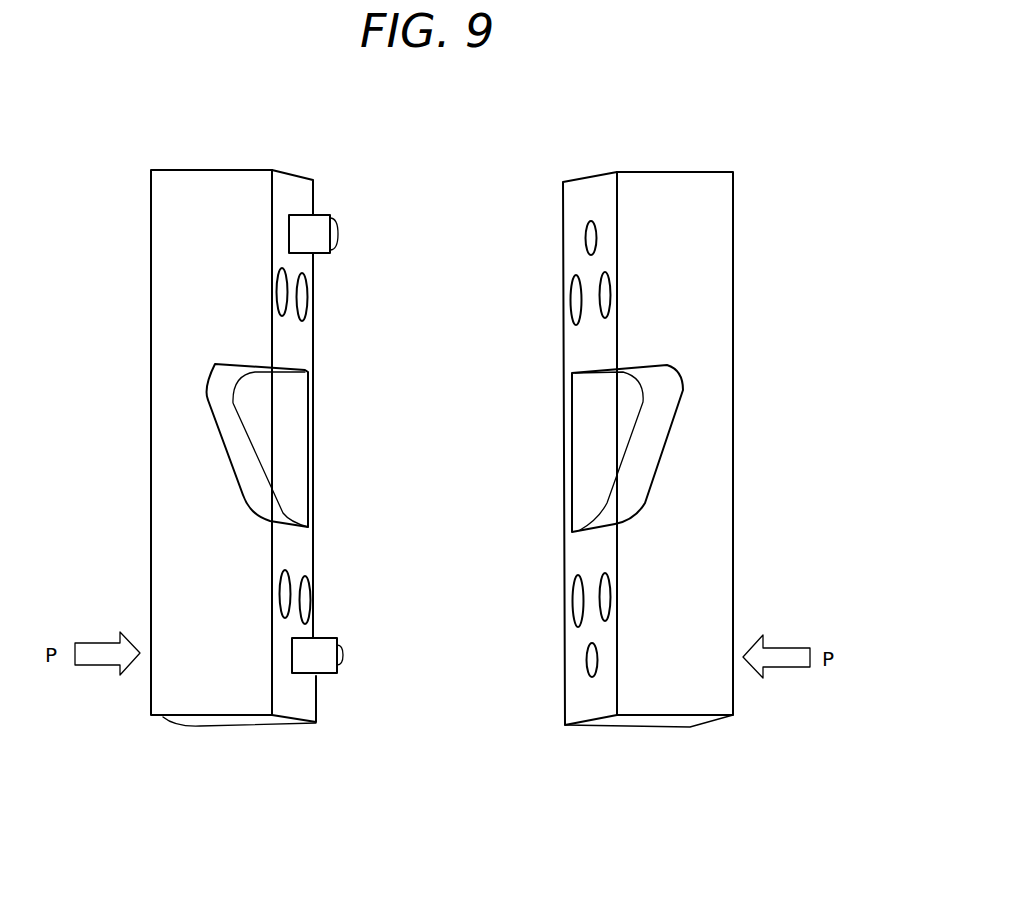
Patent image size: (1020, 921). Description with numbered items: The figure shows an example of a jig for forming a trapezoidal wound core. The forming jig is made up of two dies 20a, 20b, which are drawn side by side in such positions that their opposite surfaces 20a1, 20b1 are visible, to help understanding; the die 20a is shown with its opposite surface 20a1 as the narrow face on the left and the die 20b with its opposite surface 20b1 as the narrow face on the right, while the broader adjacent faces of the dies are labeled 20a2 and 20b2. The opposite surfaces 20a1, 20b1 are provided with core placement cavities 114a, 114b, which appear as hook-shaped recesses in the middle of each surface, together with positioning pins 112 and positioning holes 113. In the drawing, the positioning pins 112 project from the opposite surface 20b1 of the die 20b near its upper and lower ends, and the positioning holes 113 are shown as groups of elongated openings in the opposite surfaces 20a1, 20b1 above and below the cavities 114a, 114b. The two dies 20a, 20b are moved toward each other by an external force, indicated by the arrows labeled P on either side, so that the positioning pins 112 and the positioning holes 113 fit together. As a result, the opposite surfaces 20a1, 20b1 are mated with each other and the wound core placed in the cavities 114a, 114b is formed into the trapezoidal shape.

The die 20b is at (200, 667).
The opposite surface 20b1 is at (293, 186).
The second face of second block 20b2 is at (200, 186).
The die 20a is at (662, 674).
The opposite surface 20a1 is at (584, 188).
The second face of first block 20a2 is at (677, 188).
The positioning pins 112 is at (318, 221).
The positioning holes 113 is at (578, 310).
The core placement cavity 114a is at (583, 437).
The core placement cavity 114b is at (297, 453).